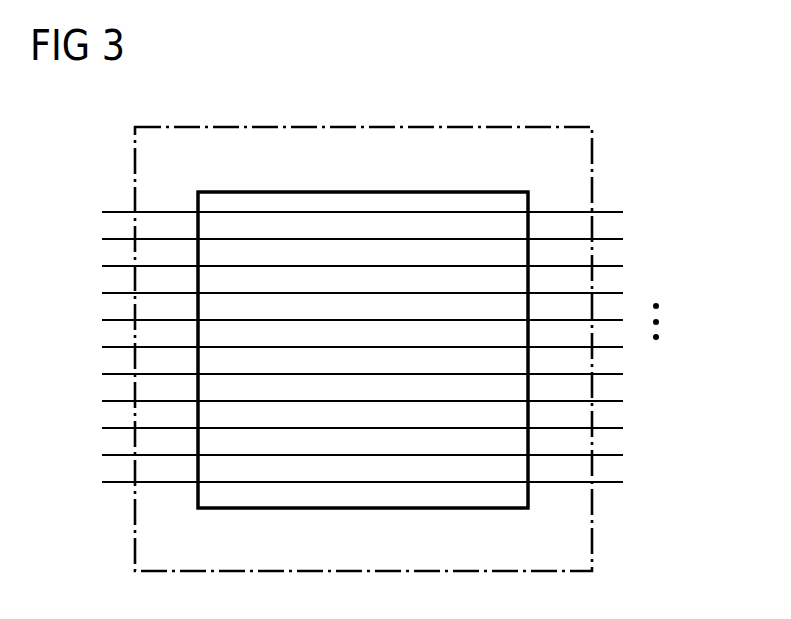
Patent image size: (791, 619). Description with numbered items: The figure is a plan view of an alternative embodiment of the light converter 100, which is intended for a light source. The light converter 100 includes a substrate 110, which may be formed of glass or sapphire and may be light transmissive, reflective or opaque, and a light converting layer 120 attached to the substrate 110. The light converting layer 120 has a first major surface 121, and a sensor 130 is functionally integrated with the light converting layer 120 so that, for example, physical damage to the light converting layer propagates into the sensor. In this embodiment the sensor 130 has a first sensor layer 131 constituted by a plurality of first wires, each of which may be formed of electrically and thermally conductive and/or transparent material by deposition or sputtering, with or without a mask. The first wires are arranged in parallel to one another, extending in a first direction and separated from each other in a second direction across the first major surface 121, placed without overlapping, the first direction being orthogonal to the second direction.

The light converter 100 is at (522, 96).
The substrate 110 is at (497, 173).
The light converting layer 120 is at (362, 192).
The first major surface 121 is at (365, 363).
The sensor 130 is at (180, 192).
The first sensor layer 131 is at (361, 317).